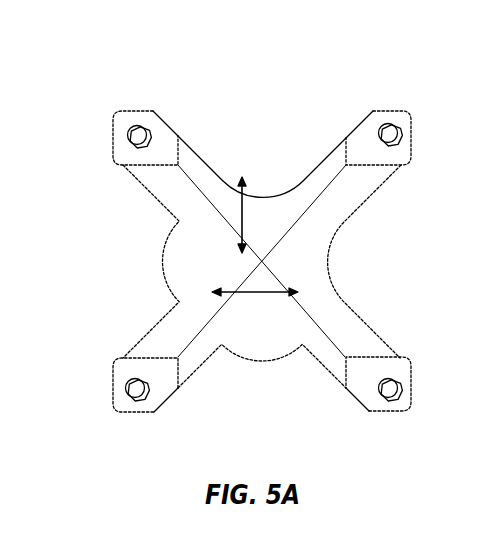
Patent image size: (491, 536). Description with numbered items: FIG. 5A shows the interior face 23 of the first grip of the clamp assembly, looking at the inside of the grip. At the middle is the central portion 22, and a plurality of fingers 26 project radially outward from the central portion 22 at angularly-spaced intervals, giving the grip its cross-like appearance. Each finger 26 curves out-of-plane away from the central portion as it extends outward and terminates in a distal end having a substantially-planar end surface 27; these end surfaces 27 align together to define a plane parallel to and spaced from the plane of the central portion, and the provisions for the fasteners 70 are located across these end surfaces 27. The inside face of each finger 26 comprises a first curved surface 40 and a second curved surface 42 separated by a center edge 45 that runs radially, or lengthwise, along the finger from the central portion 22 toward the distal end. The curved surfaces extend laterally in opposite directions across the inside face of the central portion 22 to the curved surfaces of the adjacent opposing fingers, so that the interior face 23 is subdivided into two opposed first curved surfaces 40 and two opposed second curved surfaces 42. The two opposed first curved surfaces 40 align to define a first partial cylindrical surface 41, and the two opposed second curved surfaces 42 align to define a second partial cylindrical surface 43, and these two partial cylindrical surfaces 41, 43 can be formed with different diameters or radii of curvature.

The central portion 22 is at (286, 235).
The interior face 23 is at (128, 280).
The finger 26 is at (75, 64).
The substantially-planar end surface 27 is at (373, 158).
The first curved surface 40 is at (286, 235).
The first partial cylindrical surface 41 is at (253, 294).
The second curved surface 42 is at (310, 176).
The second partial cylindrical surface 43 is at (243, 213).
The center edge 45 is at (195, 183).
The fastener 70 is at (392, 128).